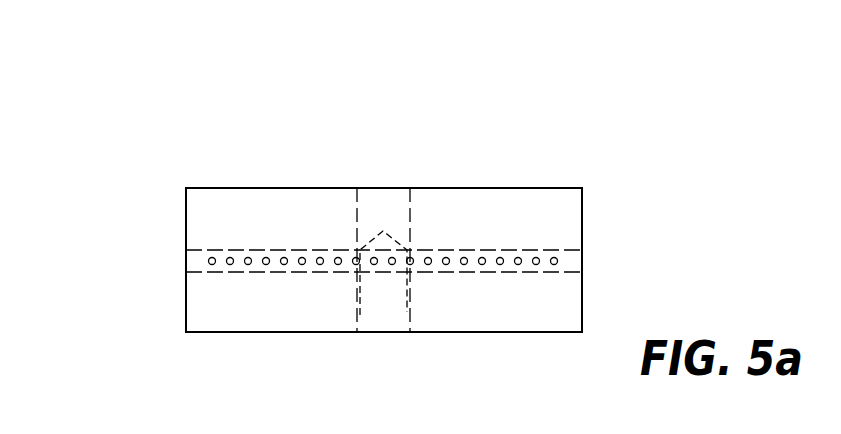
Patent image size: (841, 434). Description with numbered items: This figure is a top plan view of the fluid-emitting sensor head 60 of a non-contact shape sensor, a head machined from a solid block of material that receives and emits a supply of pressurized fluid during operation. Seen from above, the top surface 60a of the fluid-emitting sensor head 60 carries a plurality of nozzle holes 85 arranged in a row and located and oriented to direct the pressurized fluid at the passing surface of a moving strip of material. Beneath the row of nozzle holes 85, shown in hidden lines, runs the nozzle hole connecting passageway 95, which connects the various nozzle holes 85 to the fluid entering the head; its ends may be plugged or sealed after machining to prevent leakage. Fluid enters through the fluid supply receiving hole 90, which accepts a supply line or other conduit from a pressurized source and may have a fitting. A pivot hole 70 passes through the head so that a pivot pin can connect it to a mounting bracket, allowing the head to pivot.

The fluid-emitting sensor head 60 is at (128, 148).
The top surface 60a is at (508, 214).
The pivot hole 70 is at (408, 194).
The nozzle holes 85 is at (208, 260).
The fluid supply receiving hole 90 is at (412, 302).
The nozzle hole connecting passageway 95 is at (575, 260).